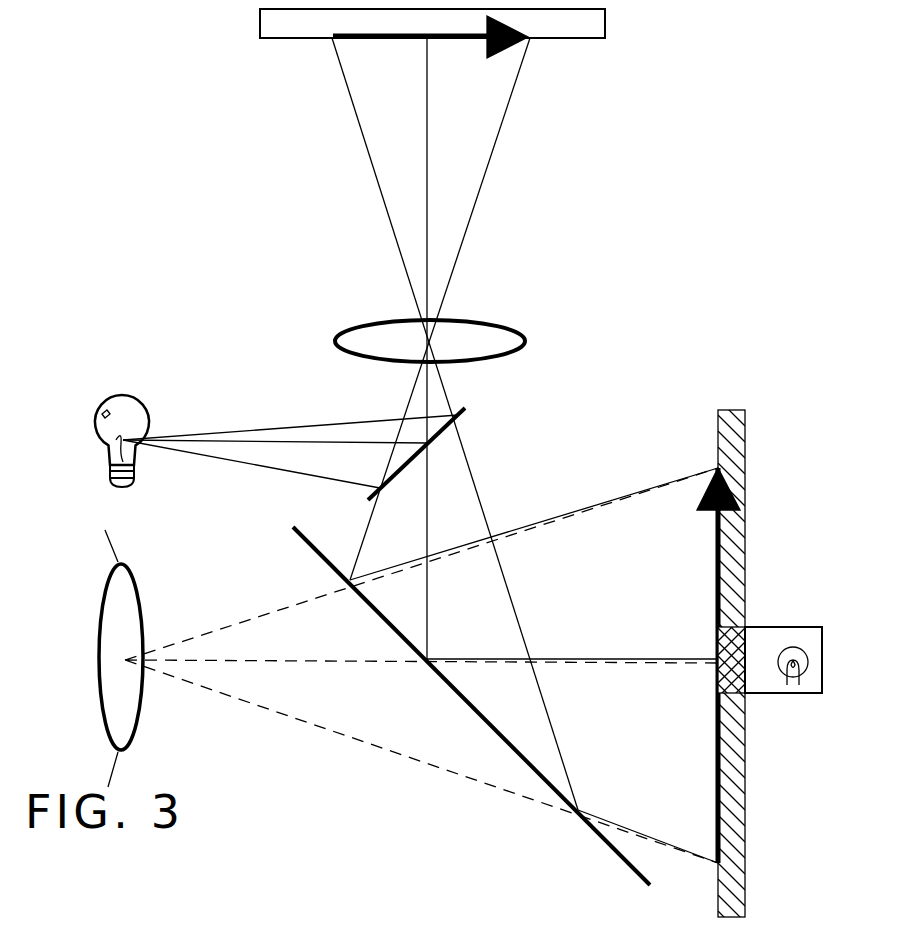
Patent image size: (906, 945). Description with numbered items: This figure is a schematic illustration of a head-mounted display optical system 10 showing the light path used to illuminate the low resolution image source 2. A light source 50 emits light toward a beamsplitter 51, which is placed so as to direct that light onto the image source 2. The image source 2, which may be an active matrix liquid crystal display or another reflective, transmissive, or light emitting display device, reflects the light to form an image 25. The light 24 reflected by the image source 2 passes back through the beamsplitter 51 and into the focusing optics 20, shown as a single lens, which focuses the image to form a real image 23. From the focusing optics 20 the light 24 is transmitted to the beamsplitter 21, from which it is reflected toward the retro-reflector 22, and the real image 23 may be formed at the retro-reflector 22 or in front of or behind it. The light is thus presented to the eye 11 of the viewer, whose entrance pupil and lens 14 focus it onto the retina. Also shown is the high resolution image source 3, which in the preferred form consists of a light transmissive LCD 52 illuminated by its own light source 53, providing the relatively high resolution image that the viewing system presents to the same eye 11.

The image source 2 is at (260, 33).
The high resolution image source 3 is at (760, 574).
The optical system 10 is at (236, 236).
The eye 11 is at (113, 768).
The entrance pupil and lens 14 is at (140, 708).
The focusing optics 20 is at (537, 264).
The beamsplitter 21 is at (322, 557).
The retro-reflector 22 is at (718, 443).
The real image 23 is at (718, 535).
The light 24 is at (352, 123).
The image 25 is at (370, 40).
The light source 50 is at (156, 398).
The beamsplitter 51 is at (403, 466).
The light transmissive LCD 52 is at (755, 652).
The light source 53 is at (798, 650).